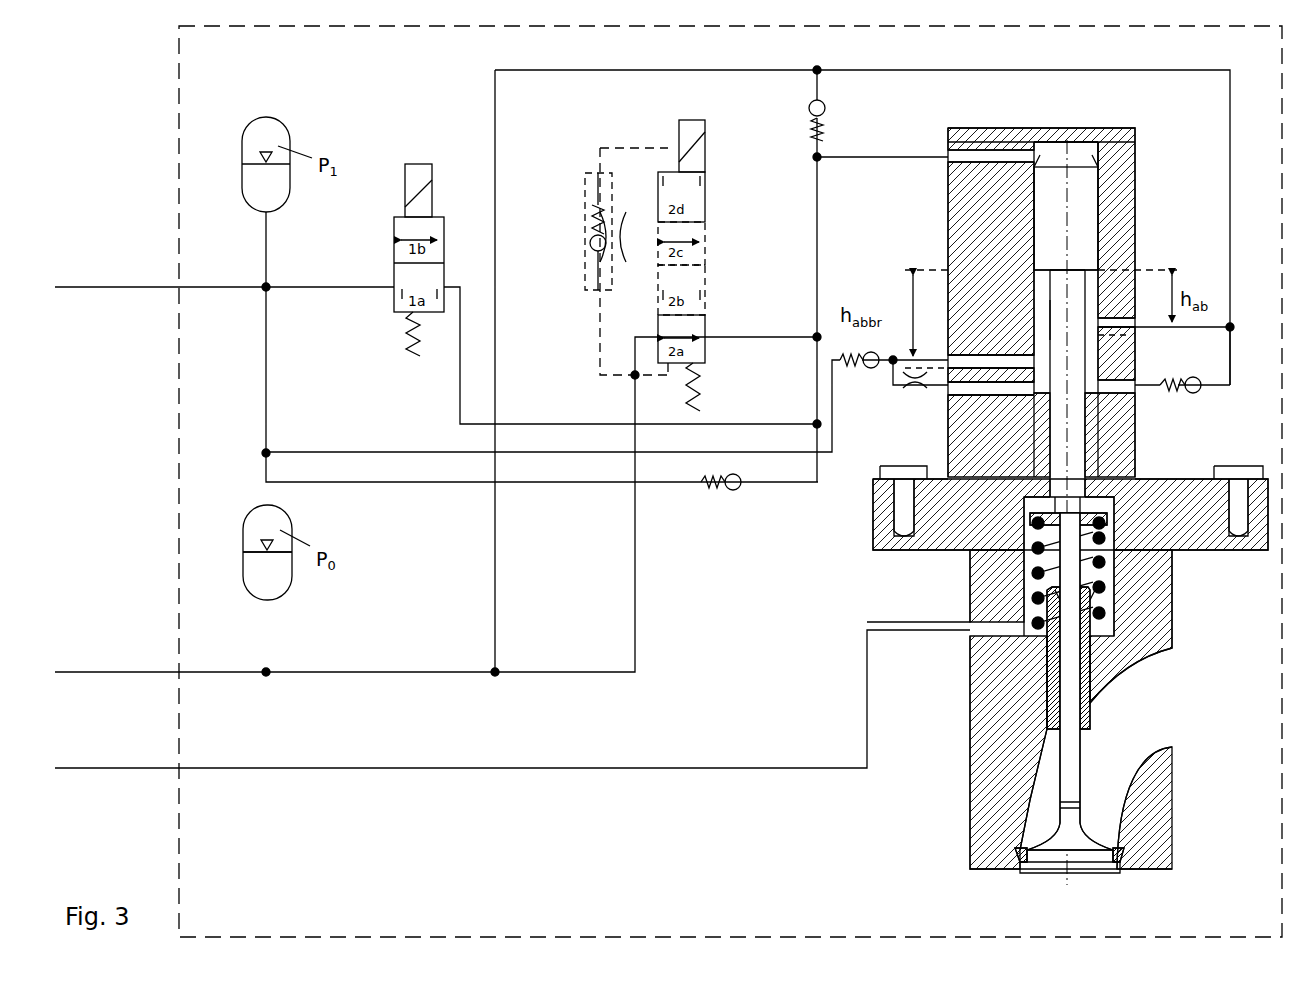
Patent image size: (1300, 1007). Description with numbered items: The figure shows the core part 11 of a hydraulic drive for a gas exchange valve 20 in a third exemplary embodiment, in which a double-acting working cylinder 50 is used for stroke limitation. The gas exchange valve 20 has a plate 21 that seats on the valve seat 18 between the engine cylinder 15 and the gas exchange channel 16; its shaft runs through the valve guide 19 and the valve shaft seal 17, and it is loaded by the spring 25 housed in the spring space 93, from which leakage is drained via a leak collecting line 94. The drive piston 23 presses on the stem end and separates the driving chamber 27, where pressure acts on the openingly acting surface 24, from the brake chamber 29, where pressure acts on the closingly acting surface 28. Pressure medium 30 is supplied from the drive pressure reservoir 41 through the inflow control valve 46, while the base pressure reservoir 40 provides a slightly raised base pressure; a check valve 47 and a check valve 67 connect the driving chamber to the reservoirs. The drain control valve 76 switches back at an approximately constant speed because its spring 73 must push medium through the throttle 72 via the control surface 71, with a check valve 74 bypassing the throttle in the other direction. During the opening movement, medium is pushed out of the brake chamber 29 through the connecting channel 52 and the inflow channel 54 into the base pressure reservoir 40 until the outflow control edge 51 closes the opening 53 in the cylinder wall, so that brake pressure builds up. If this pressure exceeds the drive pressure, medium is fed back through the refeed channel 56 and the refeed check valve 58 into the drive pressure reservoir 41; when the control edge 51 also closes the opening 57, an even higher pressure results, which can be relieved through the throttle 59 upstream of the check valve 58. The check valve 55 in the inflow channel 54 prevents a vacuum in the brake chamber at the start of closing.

The core part of the hydraulic drive 11 is at (730, 481).
The engine cylinder 15 is at (1097, 827).
The gas exchange channel 16 is at (1067, 498).
The valve shaft seal 17 is at (1105, 593).
The valve seat 18 is at (1020, 860).
The valve guide 19 is at (1055, 690).
The gas exchange valve 20 is at (1075, 752).
The plate of the gas exchange valve 21 is at (1052, 874).
The drive piston 23 is at (1082, 188).
The openingly acting pressure acting surface of the drive piston 24 is at (1087, 162).
The spring 25 is at (1040, 572).
The driving chamber 27 is at (1047, 155).
The closingly acting pressure acting surface of the drive piston 28 is at (1040, 268).
The brake chamber 29 is at (1040, 318).
The pressure medium 30 is at (272, 574).
The base pressure reservoir 40 is at (268, 526).
The drive pressure reservoir 41 is at (268, 136).
The inflow control valve 46 is at (398, 260).
The refeed-back check valve of the working chamber 47 is at (719, 500).
The double-acting working cylinder 50 is at (1076, 140).
The outflow control edge of the drive piston 51 is at (1078, 268).
The connecting channel to base pressure level 52 is at (1217, 326).
The opening of connecting channel in cylinder wall 53 is at (1103, 322).
The inflow channel of base pressure level 54 is at (1230, 358).
The check valve in the inflow channel 55 is at (1180, 398).
The refeed channel to the drive pressure reservoir 56 is at (977, 362).
The opening of the refeed channel in the cylinder wall 57 is at (1033, 366).
The refeed check valve of brake chamber 58 is at (859, 375).
The throttle 59 is at (925, 392).
The check valve between drive chamber and base pressure reservoir 67 is at (832, 120).
The pressure acting area of drain control valve 71 is at (662, 172).
The throttle of the drain control valve 72 is at (627, 237).
The spring for returning drain control valve 73 is at (707, 387).
The check valve of drain control valve 74 is at (574, 231).
The drain control valve 76 is at (696, 241).
The spring space 93 is at (1105, 607).
The leak collecting line 94 is at (330, 770).